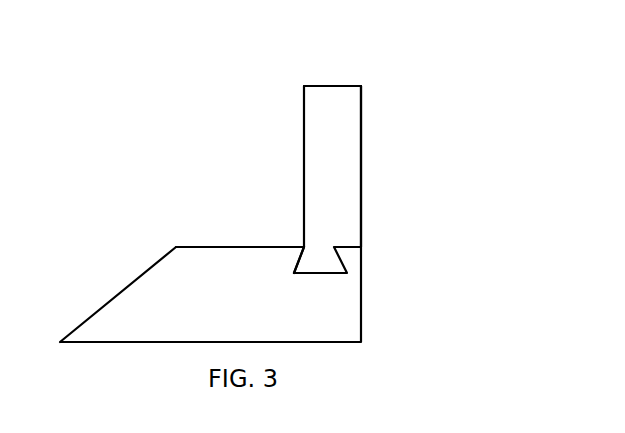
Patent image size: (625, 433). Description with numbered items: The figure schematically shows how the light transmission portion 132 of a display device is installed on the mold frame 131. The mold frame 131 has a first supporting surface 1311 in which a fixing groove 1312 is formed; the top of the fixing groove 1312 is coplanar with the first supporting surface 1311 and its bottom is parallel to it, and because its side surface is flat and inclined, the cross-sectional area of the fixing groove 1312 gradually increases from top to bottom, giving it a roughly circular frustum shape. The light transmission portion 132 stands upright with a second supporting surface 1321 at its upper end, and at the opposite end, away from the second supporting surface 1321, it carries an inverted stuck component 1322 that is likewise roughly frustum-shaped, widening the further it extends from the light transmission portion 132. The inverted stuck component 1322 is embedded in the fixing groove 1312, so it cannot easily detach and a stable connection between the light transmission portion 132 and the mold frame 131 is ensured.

The mold frame 131 is at (155, 290).
The first supporting surface 1311 is at (193, 247).
The fixing groove 1312 is at (332, 273).
The light transmission portion 132 is at (304, 140).
The second supporting surface 1321 is at (332, 86).
The inverted stuck component 1322 is at (322, 250).